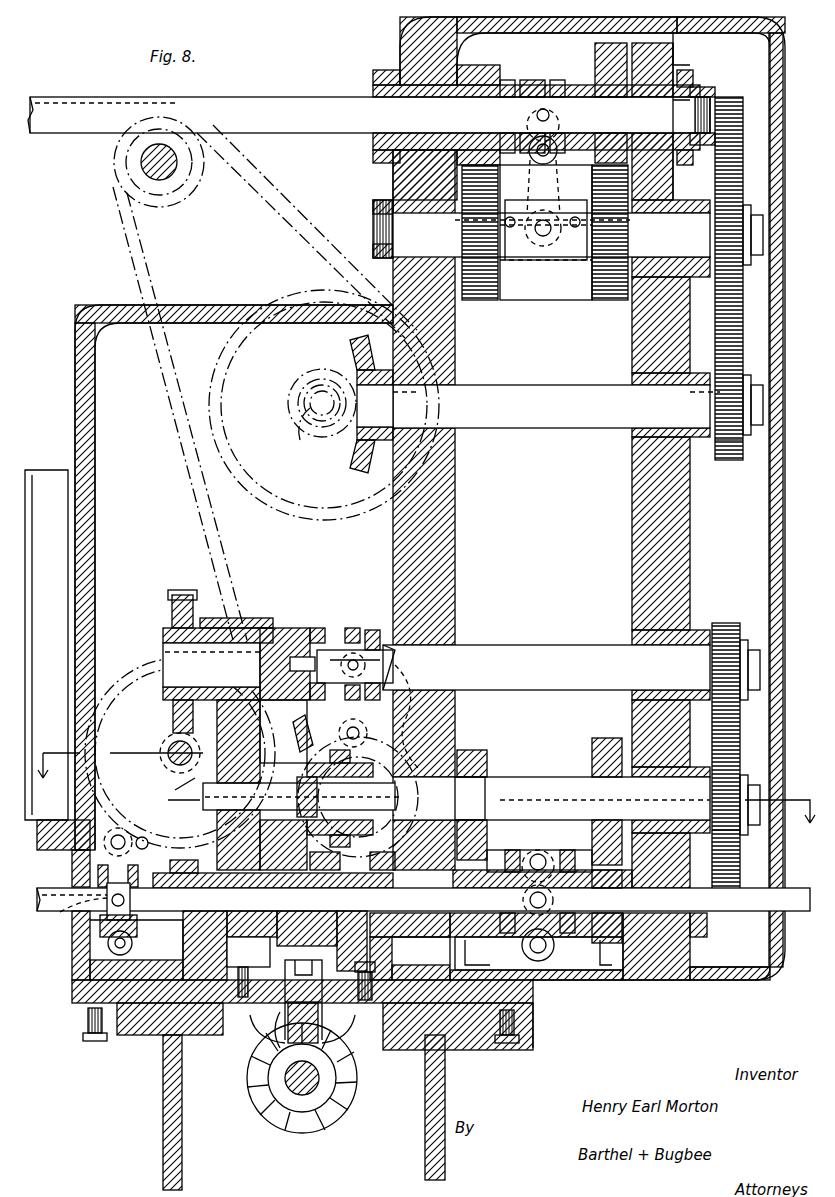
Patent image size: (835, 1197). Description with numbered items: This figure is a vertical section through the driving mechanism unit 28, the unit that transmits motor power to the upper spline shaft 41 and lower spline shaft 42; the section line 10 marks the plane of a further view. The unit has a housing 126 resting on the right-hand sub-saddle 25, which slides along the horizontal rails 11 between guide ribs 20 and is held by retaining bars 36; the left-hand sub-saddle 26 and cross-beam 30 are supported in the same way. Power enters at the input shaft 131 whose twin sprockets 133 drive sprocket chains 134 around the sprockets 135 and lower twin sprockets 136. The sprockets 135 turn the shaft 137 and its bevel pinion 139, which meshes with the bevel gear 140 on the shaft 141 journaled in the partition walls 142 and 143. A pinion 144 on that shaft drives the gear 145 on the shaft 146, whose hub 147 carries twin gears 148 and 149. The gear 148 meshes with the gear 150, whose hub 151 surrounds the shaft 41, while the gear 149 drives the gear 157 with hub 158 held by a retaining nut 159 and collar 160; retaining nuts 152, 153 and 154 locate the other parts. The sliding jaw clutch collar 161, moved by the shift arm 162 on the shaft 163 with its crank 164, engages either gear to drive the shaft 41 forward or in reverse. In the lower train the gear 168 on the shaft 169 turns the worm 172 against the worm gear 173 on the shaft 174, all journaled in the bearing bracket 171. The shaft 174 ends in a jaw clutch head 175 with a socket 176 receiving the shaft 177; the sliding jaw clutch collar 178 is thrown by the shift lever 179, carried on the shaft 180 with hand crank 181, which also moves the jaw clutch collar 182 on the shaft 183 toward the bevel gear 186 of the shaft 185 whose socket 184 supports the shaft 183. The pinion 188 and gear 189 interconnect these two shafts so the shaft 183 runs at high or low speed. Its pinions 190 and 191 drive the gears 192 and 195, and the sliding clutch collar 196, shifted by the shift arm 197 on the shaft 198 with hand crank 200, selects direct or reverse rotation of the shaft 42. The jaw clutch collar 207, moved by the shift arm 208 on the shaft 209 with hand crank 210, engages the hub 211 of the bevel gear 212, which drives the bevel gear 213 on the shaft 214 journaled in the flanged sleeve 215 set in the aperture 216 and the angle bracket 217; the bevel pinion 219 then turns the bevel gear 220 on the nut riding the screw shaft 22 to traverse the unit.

The section line 10 is at (424, 802).
The horizontal rails 11 is at (163, 1135).
The parallel guide ribs 20 is at (135, 1045).
The screw shaft 22 is at (322, 1080).
The right-hand sub-saddle 25 is at (528, 997).
The left-hand sub-saddle 26 is at (610, 1018).
The driving mechanism unit 28 is at (400, 40).
The cross-beam 30 is at (42, 475).
The retaining bars 36 is at (135, 1040).
The upper spline shaft 41 is at (240, 108).
The lower spline shaft 42 is at (58, 892).
The housing 126 is at (75, 400).
The input shaft 131 is at (143, 168).
The twin sprockets 133 is at (180, 195).
The sprocket chains 134 is at (305, 250).
The sprockets 135 is at (215, 358).
The lower twin sprockets 136 is at (358, 788).
The shaft 137 is at (300, 428).
The bevel pinion 139 is at (300, 395).
The bevel gear 140 is at (352, 468).
The shaft 141 is at (535, 418).
The partition wall 142 is at (445, 518).
The partition wall 143 is at (632, 535).
The pinion 144 is at (728, 455).
The gear 145 is at (735, 278).
The shaft 146 is at (551, 235).
The hub 147 is at (545, 270).
The twin gear 148 is at (608, 300).
The twin gear 149 is at (478, 295).
The gear 150 is at (606, 60).
The hub 151 is at (660, 178).
The retaining nut 152 is at (385, 205).
The retaining nut 153 is at (705, 90).
The retaining nut 154 is at (690, 70).
The gear 157 is at (487, 65).
The hub 158 is at (393, 178).
The retaining nut 159 is at (385, 70).
The collar 160 is at (373, 156).
The sliding jaw clutch collar 161 is at (535, 80).
The shift arm 162 is at (556, 114).
The shaft 163 is at (550, 150).
The shift crank 164 is at (552, 232).
The gear 168 is at (120, 695).
The shaft 169 is at (168, 750).
The bearing bracket 171 is at (255, 620).
The worm 172 is at (180, 770).
The worm gear 173 is at (180, 590).
The shaft 174 is at (175, 656).
The jaw clutch head 175 is at (292, 628).
The socket 176 is at (312, 628).
The shaft 177 is at (536, 658).
The sliding jaw clutch collar 178 is at (357, 628).
The shift lever 179 is at (372, 632).
The shaft 180 is at (325, 718).
The hand crank 181 is at (450, 700).
The jaw clutch collar 182 is at (355, 835).
The shaft 183 is at (530, 775).
The socket 184 is at (270, 790).
The shaft 185 is at (240, 808).
The bevel gear 186 is at (352, 861).
The pinion 188 is at (722, 625).
The gear 189 is at (726, 852).
The pinion 190 is at (604, 738).
The pinion 191 is at (472, 750).
The gear 192 is at (592, 860).
The gear 195 is at (505, 862).
The sliding clutch collar 196 is at (525, 935).
The shift arm 197 is at (555, 900).
The shaft 198 is at (550, 965).
The hand crank 200 is at (538, 852).
The jaw clutch collar 207 is at (132, 938).
The shift arm 208 is at (80, 912).
The shaft 209 is at (80, 948).
The hand crank 210 is at (136, 848).
The hub 211 is at (200, 870).
The bevel gear 212 is at (278, 918).
The bevel gear 213 is at (340, 943).
The shaft 214 is at (303, 981).
The flanged sleeve 215 is at (345, 968).
The aperture 216 is at (350, 1020).
The angle bracket 217 is at (245, 1000).
The bevel pinion 219 is at (355, 1025).
The bevel gear 220 is at (283, 1110).